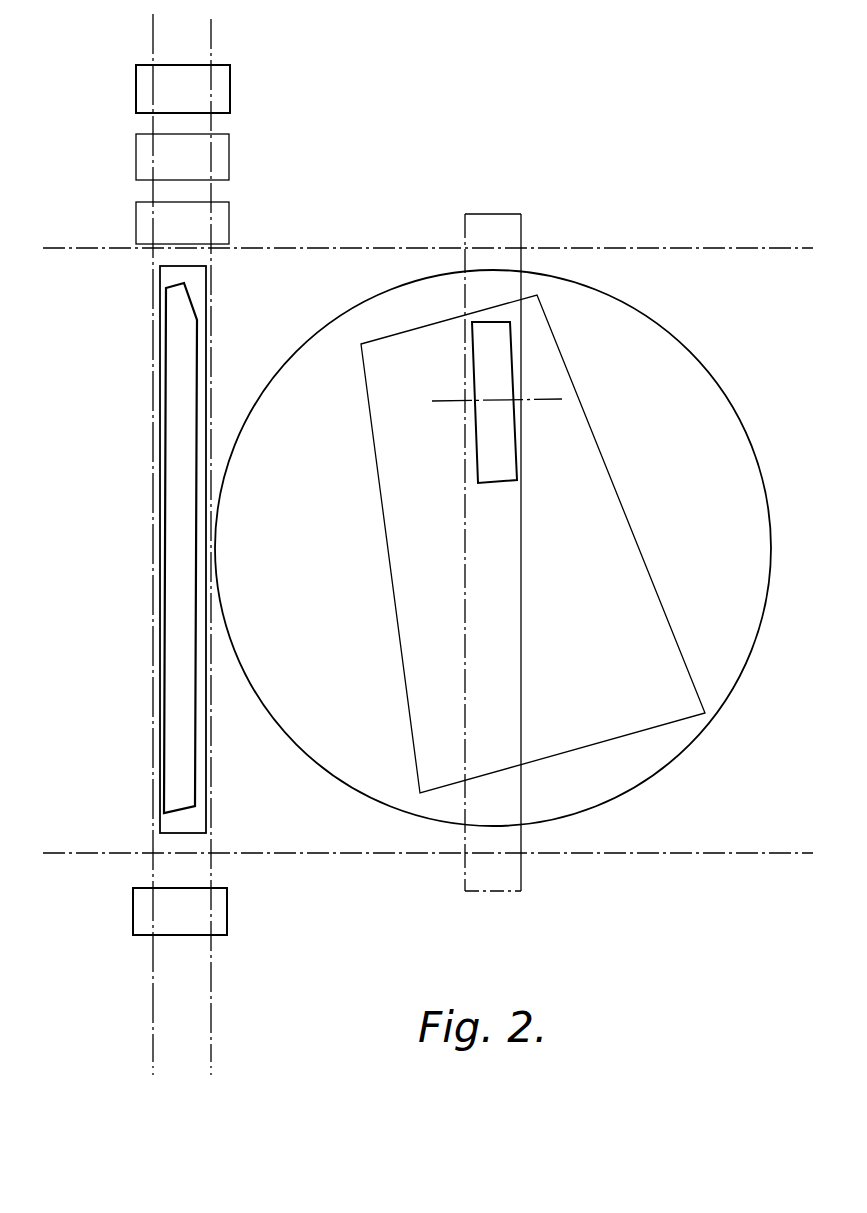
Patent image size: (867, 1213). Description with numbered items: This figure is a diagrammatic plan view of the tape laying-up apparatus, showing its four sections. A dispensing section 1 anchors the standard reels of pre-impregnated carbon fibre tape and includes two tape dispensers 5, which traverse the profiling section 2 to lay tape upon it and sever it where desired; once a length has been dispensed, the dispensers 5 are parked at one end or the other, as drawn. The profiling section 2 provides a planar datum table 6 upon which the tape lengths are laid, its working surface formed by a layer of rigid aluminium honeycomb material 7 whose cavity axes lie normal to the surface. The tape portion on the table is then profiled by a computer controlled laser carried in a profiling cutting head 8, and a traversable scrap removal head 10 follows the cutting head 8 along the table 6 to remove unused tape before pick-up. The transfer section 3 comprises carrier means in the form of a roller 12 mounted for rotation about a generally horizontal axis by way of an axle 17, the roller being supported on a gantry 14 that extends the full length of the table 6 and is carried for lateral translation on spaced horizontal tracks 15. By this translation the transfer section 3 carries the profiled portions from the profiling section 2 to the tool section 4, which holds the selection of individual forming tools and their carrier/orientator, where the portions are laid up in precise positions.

The dispensing section 1 is at (178, 547).
The profiling section 2 is at (147, 638).
The transfer section 3 is at (533, 516).
The tool section 4 is at (662, 319).
The tape dispensers 5 is at (230, 80).
The planar datum table 6 is at (162, 393).
The rigid aluminium honeycomb material 7 is at (158, 487).
The profiling cutting head 8 is at (229, 240).
The scrap removal head 10 is at (229, 165).
The roller 12 is at (500, 383).
The gantry 14 is at (489, 213).
The horizontal tracks 15 is at (341, 247).
The axle 17 is at (452, 403).